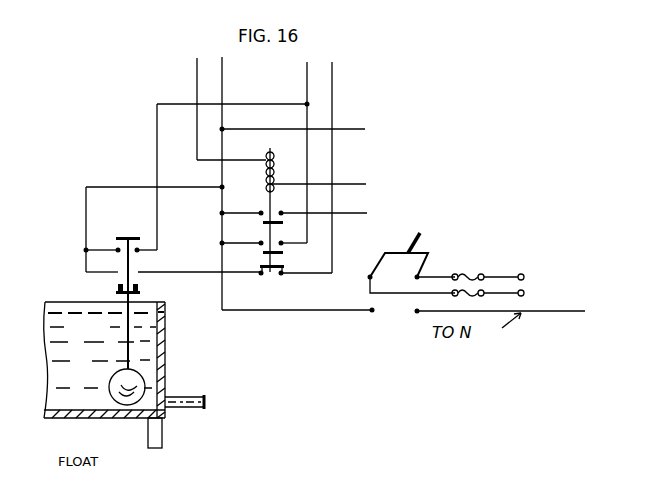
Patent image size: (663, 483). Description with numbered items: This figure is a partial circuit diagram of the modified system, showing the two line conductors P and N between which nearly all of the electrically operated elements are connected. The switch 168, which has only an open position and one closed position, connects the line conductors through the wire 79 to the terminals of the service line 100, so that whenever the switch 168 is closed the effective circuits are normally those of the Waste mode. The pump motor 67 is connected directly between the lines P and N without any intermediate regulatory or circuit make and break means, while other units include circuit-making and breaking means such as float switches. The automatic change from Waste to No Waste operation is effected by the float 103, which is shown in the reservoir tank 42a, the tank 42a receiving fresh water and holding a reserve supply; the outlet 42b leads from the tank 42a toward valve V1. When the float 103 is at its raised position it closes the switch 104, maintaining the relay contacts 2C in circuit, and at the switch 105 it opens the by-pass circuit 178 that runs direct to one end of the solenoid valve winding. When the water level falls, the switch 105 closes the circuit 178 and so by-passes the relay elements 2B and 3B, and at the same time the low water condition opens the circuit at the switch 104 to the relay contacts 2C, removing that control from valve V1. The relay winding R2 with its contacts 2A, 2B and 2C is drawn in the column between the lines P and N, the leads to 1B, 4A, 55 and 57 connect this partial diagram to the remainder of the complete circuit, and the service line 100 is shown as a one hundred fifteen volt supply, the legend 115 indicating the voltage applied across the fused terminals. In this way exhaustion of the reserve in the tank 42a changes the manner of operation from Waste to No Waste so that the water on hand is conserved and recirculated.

The line conductor P is at (220, 67).
The connection from 57 is at (194, 70).
The by-pass circuit 178 is at (238, 104).
The connection to 1B is at (309, 67).
The relay element 3B is at (294, 152).
The connection to 4A is at (334, 72).
The pump motor 67 is at (343, 128).
The line conductor N is at (338, 182).
The connection to 55 is at (340, 212).
The relay coil R2 is at (266, 165).
The relay contact 2A is at (253, 208).
The relay element 2B is at (253, 238).
The relay contacts 2C is at (211, 263).
The switch 105 is at (137, 219).
The switch 104 is at (115, 287).
The reservoir tank 42a is at (104, 360).
The float 103 is at (114, 398).
The outlet pipe to V1 42b is at (262, 404).
The wire 79 is at (260, 310).
The switch 168 is at (424, 248).
The service line 100 is at (502, 288).
The 115 V supply 115 is at (535, 286).